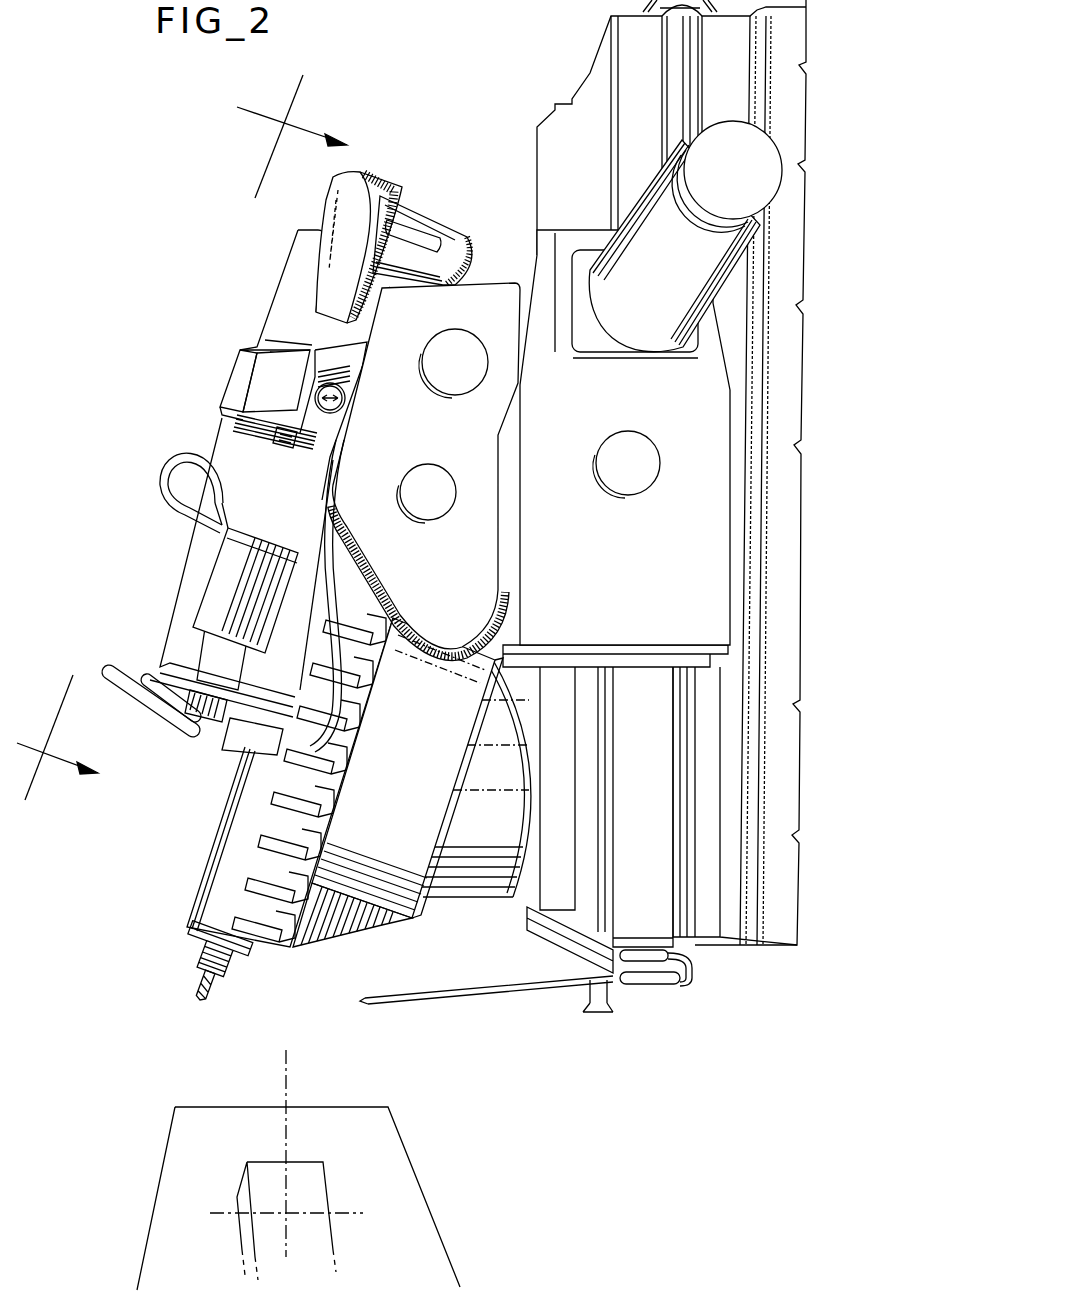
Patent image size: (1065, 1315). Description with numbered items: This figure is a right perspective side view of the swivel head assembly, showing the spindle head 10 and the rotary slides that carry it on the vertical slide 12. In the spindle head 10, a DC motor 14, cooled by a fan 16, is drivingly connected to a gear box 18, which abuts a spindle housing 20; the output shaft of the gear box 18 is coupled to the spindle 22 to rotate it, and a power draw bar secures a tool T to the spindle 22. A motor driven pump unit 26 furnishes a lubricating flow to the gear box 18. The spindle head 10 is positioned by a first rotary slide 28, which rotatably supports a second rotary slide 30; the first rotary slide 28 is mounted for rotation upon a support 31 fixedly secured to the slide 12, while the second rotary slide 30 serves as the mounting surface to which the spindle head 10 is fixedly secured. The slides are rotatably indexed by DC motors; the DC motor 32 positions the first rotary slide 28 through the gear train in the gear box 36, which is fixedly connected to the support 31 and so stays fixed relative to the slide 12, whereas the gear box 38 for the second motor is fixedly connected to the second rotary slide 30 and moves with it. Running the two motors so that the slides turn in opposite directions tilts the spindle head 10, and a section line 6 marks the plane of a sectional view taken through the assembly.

The spindle head 10 is at (430, 112).
The slide 12 is at (648, 800).
The DC motor 14 is at (308, 252).
The fan 16 is at (377, 173).
The gear box 18 is at (187, 637).
The spindle housing 20 is at (230, 840).
The spindle 22 is at (203, 948).
The motor driven pump unit 26 is at (230, 572).
The first rotary slide 28 is at (485, 845).
The second rotary slide 30 is at (398, 782).
The support 31 is at (558, 745).
The DC motor 32 is at (685, 236).
The gear box 36 is at (625, 437).
The gear box 38 is at (424, 472).
The section line 6- 6 is at (177, 437).
The tool T is at (195, 995).